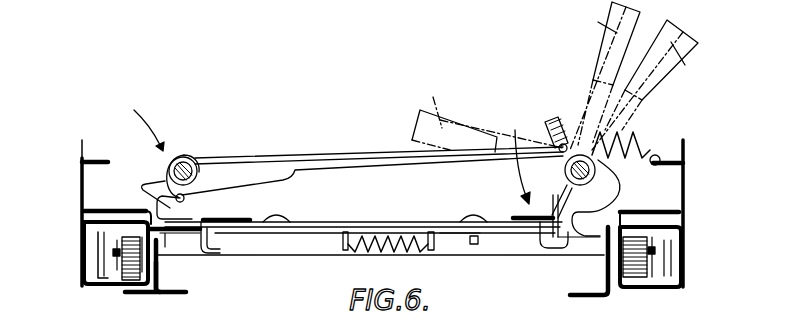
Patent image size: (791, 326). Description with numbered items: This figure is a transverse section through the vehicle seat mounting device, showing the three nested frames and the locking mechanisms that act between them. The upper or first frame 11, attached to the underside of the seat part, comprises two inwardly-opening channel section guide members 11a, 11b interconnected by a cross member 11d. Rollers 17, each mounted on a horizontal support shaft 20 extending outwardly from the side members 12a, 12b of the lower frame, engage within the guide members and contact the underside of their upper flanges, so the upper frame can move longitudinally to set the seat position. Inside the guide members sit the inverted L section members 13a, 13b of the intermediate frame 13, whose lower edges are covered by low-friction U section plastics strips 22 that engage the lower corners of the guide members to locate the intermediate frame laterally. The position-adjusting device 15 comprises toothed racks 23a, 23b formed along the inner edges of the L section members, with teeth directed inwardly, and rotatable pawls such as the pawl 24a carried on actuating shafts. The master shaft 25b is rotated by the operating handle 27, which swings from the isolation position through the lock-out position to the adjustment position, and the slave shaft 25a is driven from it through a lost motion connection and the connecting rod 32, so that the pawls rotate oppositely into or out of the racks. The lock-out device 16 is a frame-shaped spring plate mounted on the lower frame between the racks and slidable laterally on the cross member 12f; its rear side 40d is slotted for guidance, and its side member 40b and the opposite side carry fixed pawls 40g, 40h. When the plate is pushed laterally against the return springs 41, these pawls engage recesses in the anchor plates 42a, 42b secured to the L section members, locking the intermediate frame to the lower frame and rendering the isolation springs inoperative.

The first frame 11 is at (77, 220).
The guide member 11a is at (108, 270).
The guide member 11b is at (660, 290).
The cross member 11d is at (265, 158).
The side member 12a is at (175, 295).
The side member 12b is at (578, 296).
The cross member 12f is at (458, 233).
The intermediate frame 13 is at (292, 263).
The inverted L section member 13a is at (98, 243).
The inverted L section member 13b is at (678, 220).
The position-adjusting device 15 is at (133, 118).
The lock-out device 16 is at (514, 152).
The roller 17 is at (133, 265).
The horizontal support shaft 20 is at (117, 255).
The U section plastics strip 22 is at (158, 291).
The toothed rack 23a is at (140, 212).
The toothed rack 23b is at (645, 145).
The rotatable pawl 24a is at (173, 208).
The slave shaft 25a is at (184, 158).
The master shaft 25b is at (574, 152).
The operating handle 27 is at (603, 63).
The connecting rod 32 is at (341, 162).
The side member of spring plate 40b is at (518, 214).
The rear side of spring plate 40d is at (405, 228).
The fixed pawl 40g is at (211, 243).
The fixed pawl 40h is at (545, 239).
The return spring 41 is at (363, 236).
The anchor plate 42a is at (185, 218).
The anchor plate 42b is at (565, 243).